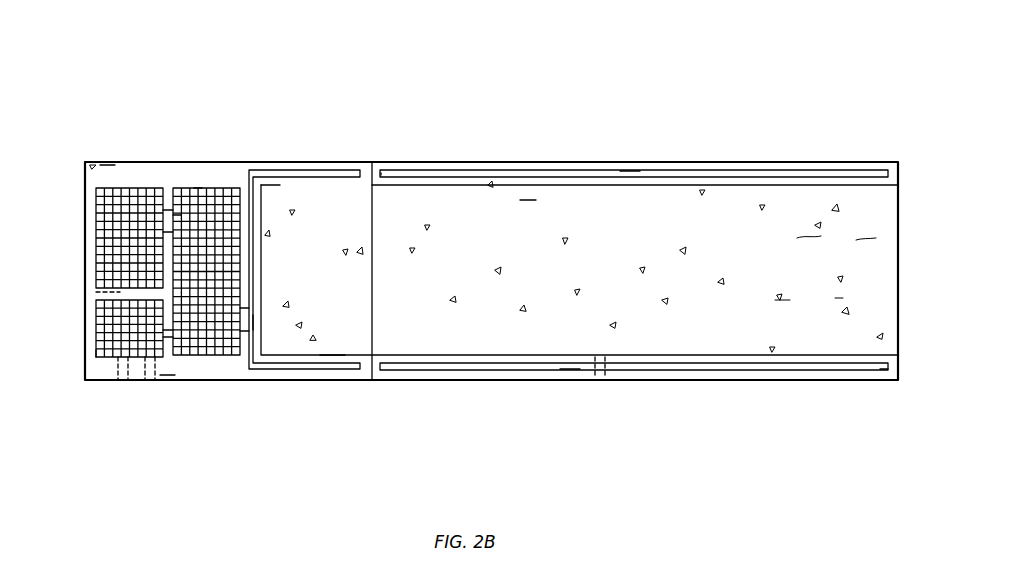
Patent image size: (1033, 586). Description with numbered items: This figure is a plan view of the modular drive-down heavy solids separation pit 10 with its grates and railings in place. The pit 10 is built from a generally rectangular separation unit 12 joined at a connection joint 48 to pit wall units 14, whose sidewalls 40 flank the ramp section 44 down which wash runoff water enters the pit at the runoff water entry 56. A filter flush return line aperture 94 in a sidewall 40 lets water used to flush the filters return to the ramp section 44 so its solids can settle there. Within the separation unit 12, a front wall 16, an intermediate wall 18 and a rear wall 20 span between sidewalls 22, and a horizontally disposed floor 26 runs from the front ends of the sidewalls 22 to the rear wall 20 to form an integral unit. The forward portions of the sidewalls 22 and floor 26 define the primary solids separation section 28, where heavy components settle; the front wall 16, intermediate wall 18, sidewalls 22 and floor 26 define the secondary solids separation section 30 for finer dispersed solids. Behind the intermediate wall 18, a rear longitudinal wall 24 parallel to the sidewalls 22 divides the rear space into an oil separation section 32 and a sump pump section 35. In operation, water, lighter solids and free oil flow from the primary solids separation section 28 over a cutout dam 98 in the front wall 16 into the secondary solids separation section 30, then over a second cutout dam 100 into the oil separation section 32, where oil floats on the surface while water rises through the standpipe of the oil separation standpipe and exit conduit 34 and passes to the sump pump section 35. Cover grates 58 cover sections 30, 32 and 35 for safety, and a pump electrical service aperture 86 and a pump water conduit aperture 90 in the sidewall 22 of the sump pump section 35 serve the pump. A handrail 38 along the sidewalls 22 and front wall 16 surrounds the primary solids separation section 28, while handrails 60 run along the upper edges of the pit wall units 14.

The modular drive-down pit system 10 is at (550, 108).
The separation unit 12 is at (240, 85).
The pit wall units 14 is at (707, 134).
The front wall 16 is at (262, 217).
The intermediate wall 18 is at (177, 216).
The rear wall 20 is at (92, 238).
The sidewalls 22 is at (108, 170).
The rear longitudinal wall 24 is at (133, 297).
The floor 26 is at (378, 222).
The primary solids separation section 28 is at (332, 348).
The secondary solids separation section 30 is at (200, 357).
The oil separation section 32 is at (82, 183).
The oil separation standpipe and exit conduit 34 is at (100, 291).
The sump pump section 35 is at (98, 350).
The handrail 38 is at (330, 172).
The sidewall 40 is at (755, 161).
The ramp section 44 is at (528, 200).
The connection joint 48 is at (381, 173).
The runoff water entry 56 is at (898, 197).
The separation unit cover grates 58 is at (220, 200).
The handrail 60 is at (620, 171).
The pump electrical service aperture 86 is at (123, 380).
The pump water conduit aperture 90 is at (155, 380).
The filter flush return line aperture 94 is at (610, 378).
The cutout dam 98 is at (262, 323).
The cutout dam 100 is at (197, 187).